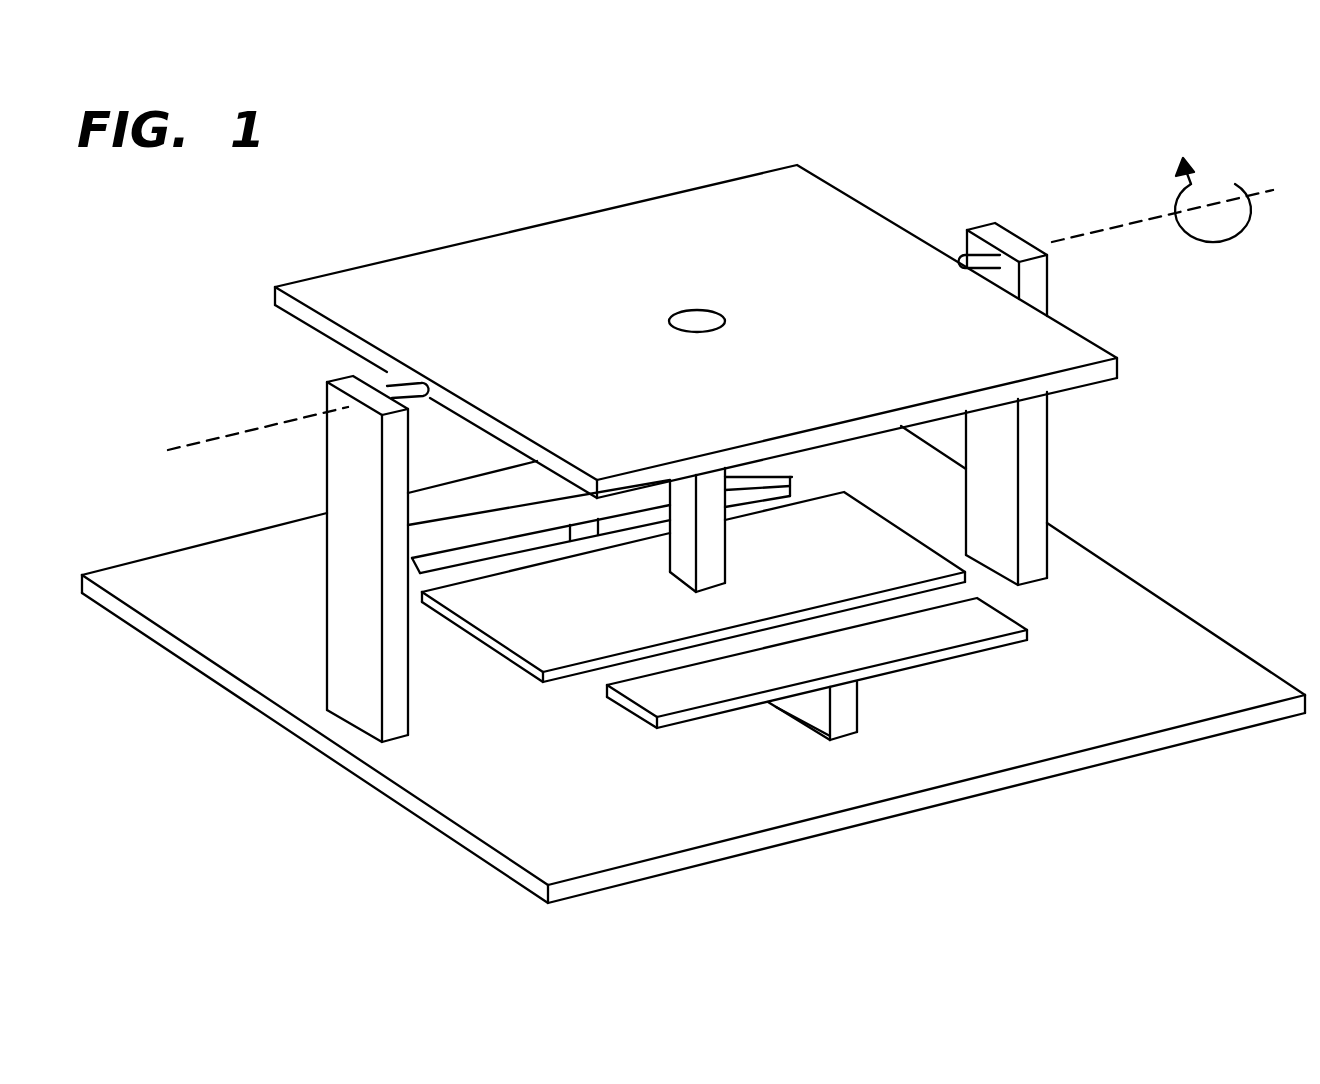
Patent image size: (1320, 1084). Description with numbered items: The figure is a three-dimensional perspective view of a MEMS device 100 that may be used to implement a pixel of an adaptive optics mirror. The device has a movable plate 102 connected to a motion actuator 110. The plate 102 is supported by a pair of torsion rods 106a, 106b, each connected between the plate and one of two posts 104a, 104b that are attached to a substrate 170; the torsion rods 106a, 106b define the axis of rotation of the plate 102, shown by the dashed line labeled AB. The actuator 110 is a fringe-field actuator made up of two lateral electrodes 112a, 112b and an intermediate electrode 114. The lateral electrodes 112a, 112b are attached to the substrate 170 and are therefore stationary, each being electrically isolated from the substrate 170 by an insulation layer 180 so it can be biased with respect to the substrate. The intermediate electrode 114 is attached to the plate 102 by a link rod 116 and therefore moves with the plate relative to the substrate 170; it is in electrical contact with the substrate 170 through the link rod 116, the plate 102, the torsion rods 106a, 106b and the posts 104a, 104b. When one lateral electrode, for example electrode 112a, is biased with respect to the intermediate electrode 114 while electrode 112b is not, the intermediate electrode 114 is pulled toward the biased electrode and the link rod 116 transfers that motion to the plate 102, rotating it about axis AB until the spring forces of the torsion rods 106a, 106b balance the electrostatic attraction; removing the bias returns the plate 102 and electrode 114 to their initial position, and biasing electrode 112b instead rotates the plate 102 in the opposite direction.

The MEMS device 100 is at (228, 880).
The movable plate 102 is at (776, 180).
The post 104a is at (1003, 237).
The post 104b is at (334, 494).
The torsion rod 106a is at (957, 255).
The torsion rod 106b is at (334, 370).
The motion actuator 110 is at (1143, 773).
The lateral electrode 112a is at (955, 637).
The lateral electrode 112b is at (765, 471).
The intermediate electrode 114 is at (826, 573).
The link rod 116 is at (686, 567).
The substrate 170 is at (1190, 622).
The insulation layer 180 is at (858, 732).